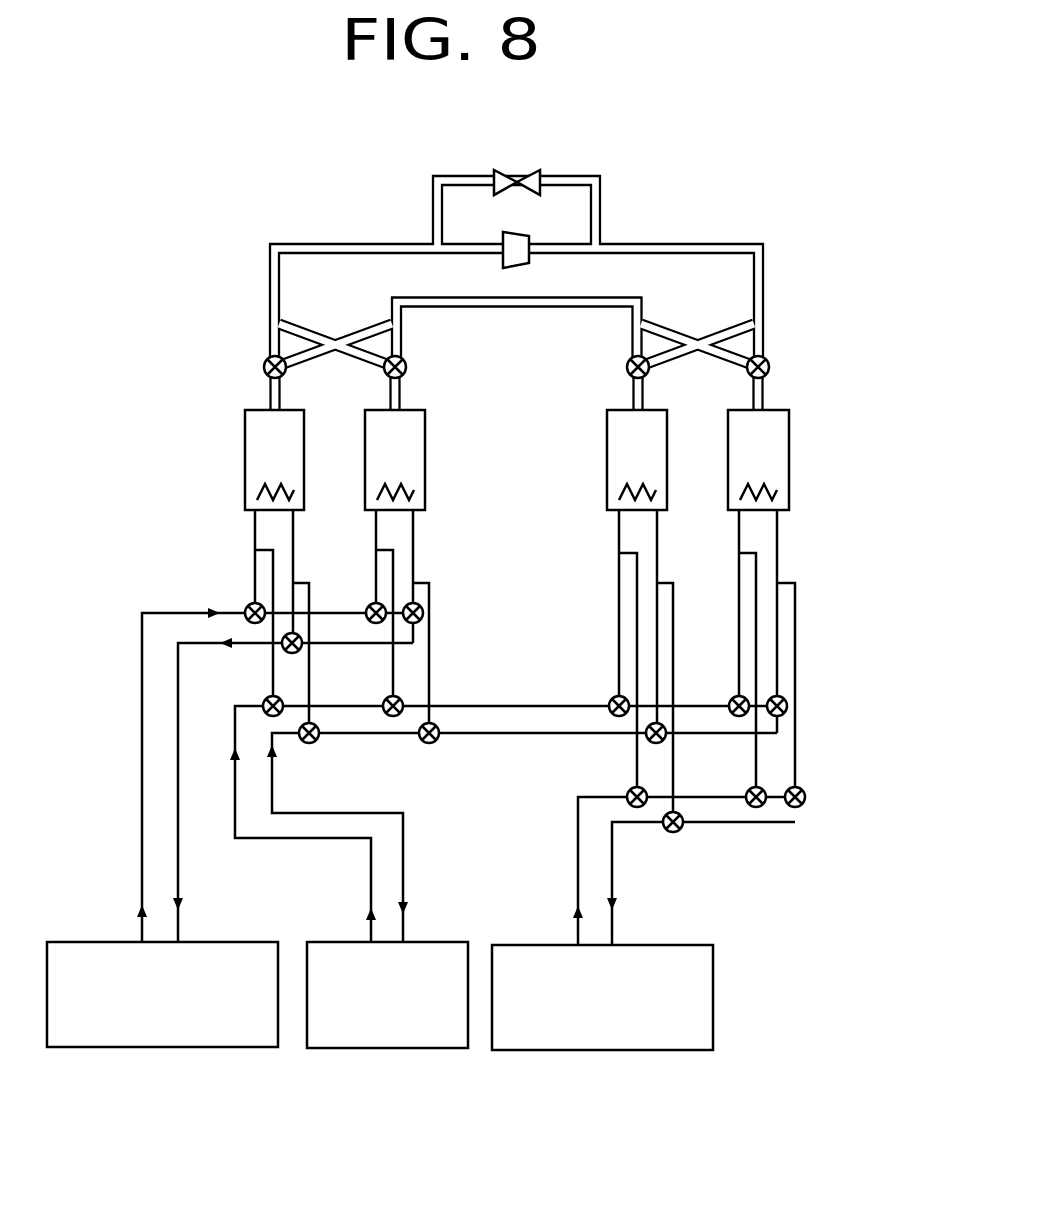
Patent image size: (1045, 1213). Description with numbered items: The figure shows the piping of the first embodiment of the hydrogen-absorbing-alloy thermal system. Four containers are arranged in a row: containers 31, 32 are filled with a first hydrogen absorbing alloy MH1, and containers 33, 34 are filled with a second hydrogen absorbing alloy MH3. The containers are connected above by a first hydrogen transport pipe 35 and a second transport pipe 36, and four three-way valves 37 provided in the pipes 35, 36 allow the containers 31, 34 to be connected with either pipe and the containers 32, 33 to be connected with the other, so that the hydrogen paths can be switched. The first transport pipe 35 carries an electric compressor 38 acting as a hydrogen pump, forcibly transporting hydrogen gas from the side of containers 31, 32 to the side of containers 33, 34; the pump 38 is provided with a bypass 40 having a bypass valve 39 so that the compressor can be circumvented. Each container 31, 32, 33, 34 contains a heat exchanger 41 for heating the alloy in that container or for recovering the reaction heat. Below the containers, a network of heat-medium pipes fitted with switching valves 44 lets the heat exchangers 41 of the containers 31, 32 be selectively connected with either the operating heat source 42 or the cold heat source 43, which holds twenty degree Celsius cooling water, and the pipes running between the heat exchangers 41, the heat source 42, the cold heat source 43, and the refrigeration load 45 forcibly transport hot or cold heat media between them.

The container 31 is at (245, 417).
The container 32 is at (365, 423).
The container 33 is at (607, 420).
The container 34 is at (728, 420).
The first hydrogen transport pipe 35 is at (352, 244).
The second transport pipe 36 is at (517, 307).
The three-way valve 37 is at (262, 364).
The electric compressor 38 is at (523, 267).
The bypass valve 39 is at (510, 167).
The bypass 40 is at (468, 175).
The heat exchanger 41 is at (294, 490).
The operating heat source 42 is at (258, 1048).
The cold heat source 43 is at (450, 1050).
The switching valve 44 is at (249, 605).
The refrigeration load 45 is at (695, 1052).